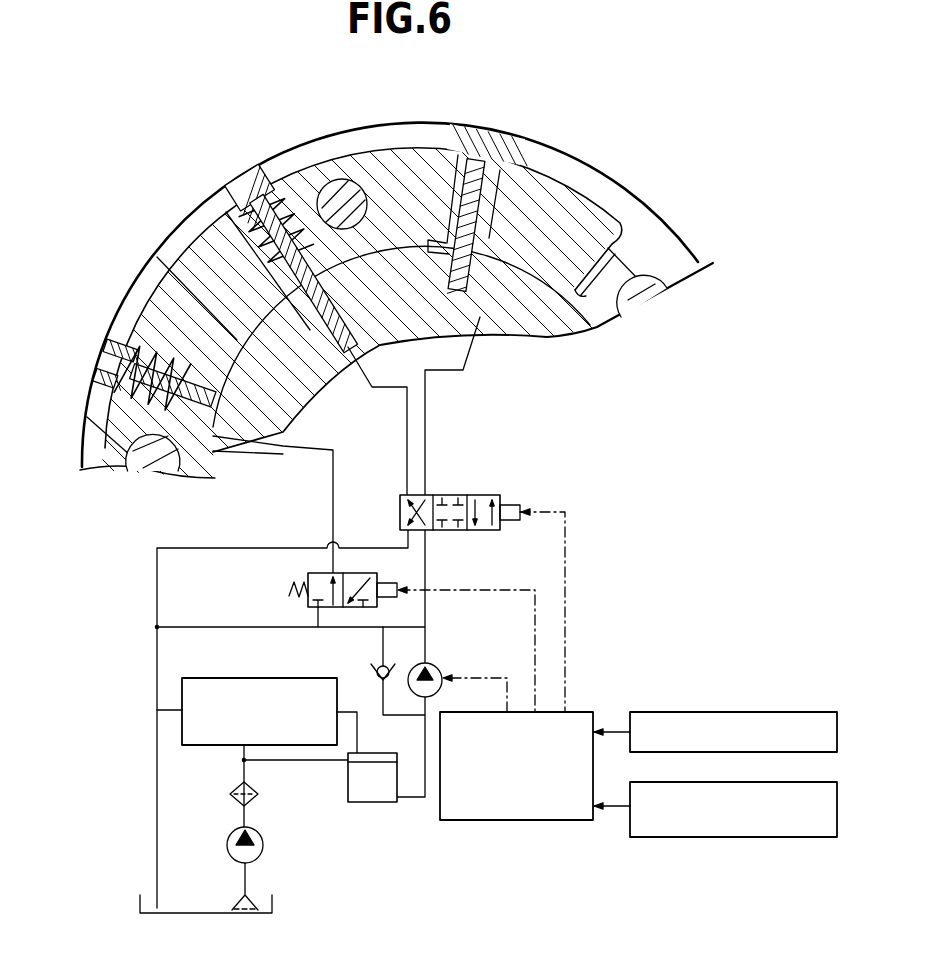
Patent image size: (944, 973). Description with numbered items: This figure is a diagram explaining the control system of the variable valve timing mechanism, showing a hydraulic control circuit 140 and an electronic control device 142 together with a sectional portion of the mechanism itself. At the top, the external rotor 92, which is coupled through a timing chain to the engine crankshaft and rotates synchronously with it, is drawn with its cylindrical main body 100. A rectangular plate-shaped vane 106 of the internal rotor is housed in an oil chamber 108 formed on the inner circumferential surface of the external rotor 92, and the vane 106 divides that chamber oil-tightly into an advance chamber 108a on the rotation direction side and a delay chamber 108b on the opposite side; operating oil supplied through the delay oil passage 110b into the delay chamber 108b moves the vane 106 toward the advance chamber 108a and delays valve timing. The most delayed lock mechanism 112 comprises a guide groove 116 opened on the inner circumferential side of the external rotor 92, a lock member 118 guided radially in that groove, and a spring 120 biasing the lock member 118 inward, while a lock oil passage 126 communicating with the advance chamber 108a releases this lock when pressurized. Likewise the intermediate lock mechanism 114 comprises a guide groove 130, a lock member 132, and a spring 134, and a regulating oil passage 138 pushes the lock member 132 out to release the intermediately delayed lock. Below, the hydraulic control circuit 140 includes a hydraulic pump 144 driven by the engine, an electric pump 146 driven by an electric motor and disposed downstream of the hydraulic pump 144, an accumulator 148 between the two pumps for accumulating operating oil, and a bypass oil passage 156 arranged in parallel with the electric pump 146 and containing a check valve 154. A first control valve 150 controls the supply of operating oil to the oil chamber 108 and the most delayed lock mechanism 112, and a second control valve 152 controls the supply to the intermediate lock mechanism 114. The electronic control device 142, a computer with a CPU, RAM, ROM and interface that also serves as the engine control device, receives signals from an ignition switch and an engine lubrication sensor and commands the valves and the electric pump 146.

The external rotor 92 is at (683, 228).
The cylindrical main body 100 is at (600, 190).
The vane 106 is at (470, 224).
The oil chamber 108 is at (600, 126).
The advance chamber 108a is at (460, 182).
The delay chamber 108b is at (502, 182).
The delay oil passage 110b is at (463, 358).
The most delayed lock mechanism 112 is at (217, 182).
The intermediate lock mechanism 114 is at (93, 354).
The guide groove 116 is at (252, 267).
The lock member 118 is at (258, 276).
The spring 120 is at (273, 174).
The lock oil passage 126 is at (387, 394).
The guide groove 130 is at (132, 300).
The lock member 132 is at (88, 410).
The spring 134 is at (130, 332).
The regulating oil passage 138 is at (331, 470).
The hydraulic control circuit 140 is at (613, 457).
The electronic control device 142 is at (508, 814).
The hydraulic pump 144 is at (260, 844).
The electric pump 146 is at (434, 665).
The accumulator 148 is at (375, 795).
The first control valve 150 is at (470, 480).
The second control valve 152 is at (293, 578).
The check valve 154 is at (377, 672).
The bypass oil passage 156 is at (383, 641).